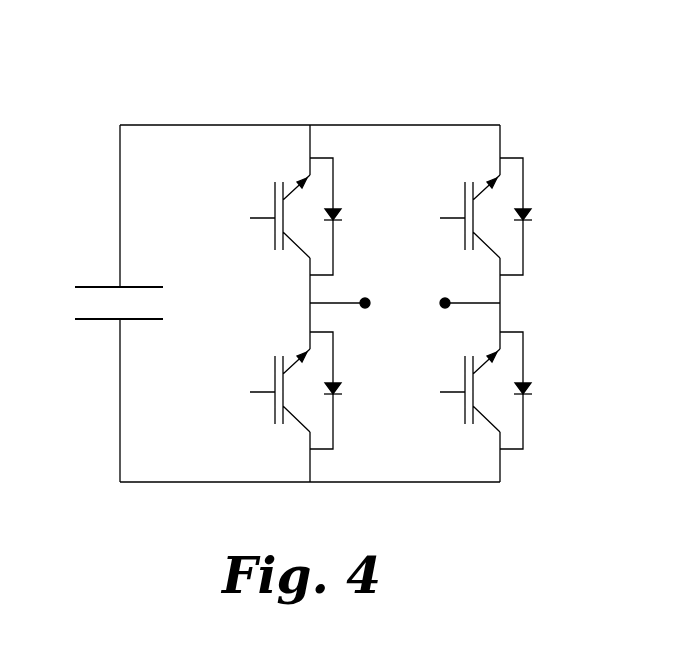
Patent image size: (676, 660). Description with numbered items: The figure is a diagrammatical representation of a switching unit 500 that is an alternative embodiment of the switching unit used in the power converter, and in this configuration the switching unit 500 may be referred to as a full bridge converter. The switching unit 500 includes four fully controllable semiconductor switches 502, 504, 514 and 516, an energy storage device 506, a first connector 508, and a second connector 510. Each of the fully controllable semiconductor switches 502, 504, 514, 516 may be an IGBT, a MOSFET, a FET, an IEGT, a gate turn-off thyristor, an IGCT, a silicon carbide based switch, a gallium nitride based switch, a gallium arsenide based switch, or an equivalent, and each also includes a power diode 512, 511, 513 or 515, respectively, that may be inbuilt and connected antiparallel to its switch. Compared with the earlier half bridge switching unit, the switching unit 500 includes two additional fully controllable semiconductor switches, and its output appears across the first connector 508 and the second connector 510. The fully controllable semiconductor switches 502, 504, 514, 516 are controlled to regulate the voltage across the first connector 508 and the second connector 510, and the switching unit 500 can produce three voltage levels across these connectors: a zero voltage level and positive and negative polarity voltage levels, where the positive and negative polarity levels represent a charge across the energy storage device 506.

The switching unit 500 is at (100, 67).
The fully controllable semiconductor switch 502 is at (275, 243).
The fully controllable semiconductor switch 504 is at (275, 417).
The energy storage device 506 is at (92, 319).
The first connector 508 is at (366, 298).
The second connector 510 is at (444, 308).
The power diode 511 is at (335, 392).
The power diode 512 is at (335, 218).
The power diode 513 is at (525, 218).
The fully controllable semiconductor switch 514 is at (465, 240).
The power diode 515 is at (525, 392).
The fully controllable semiconductor switch 516 is at (465, 410).